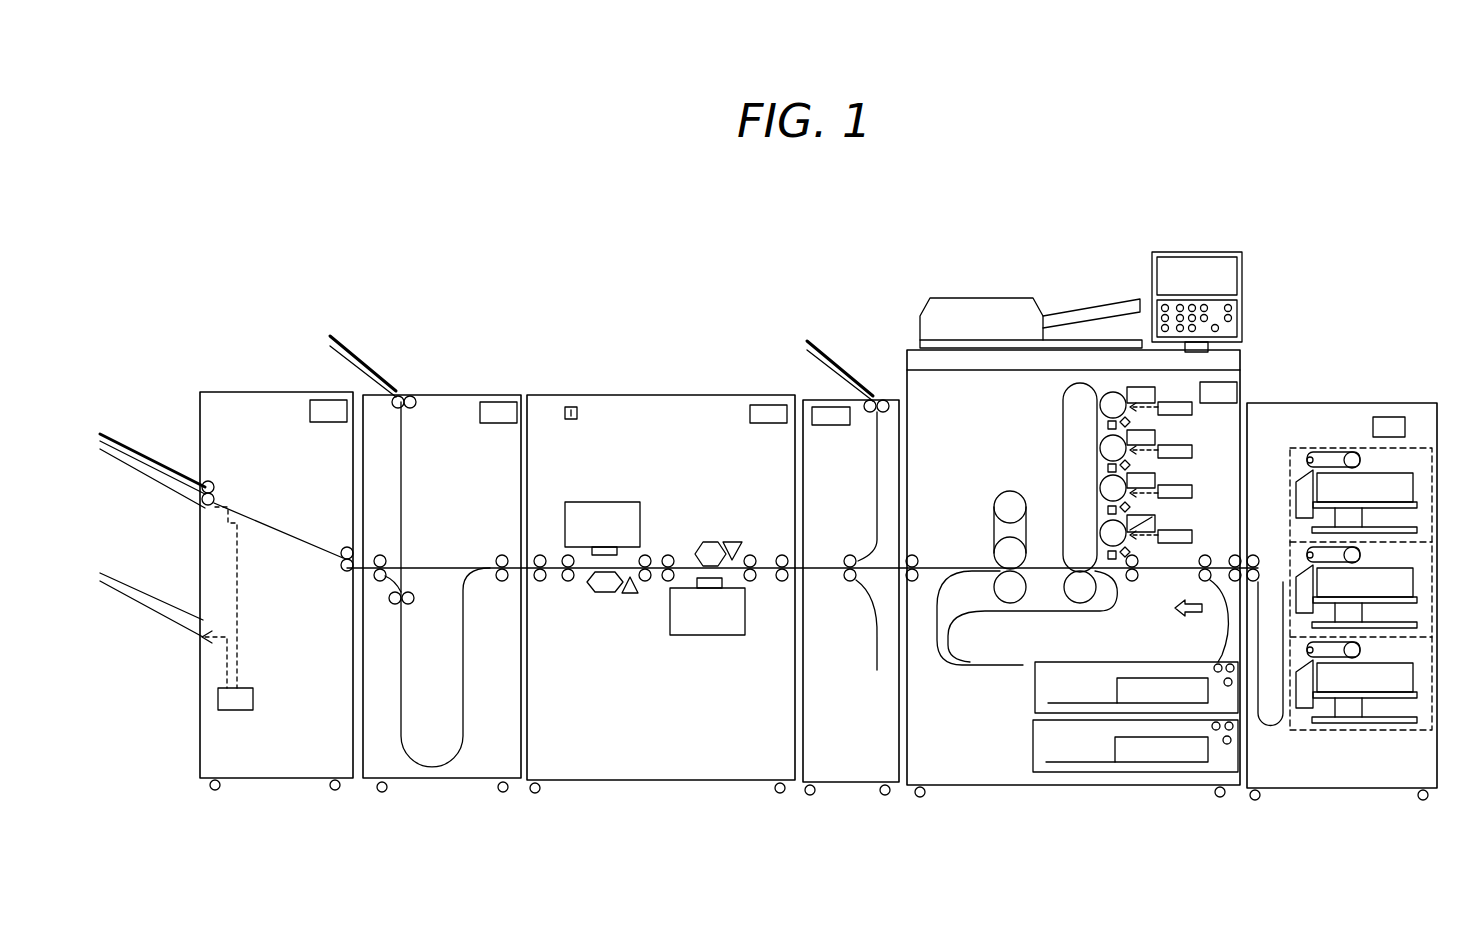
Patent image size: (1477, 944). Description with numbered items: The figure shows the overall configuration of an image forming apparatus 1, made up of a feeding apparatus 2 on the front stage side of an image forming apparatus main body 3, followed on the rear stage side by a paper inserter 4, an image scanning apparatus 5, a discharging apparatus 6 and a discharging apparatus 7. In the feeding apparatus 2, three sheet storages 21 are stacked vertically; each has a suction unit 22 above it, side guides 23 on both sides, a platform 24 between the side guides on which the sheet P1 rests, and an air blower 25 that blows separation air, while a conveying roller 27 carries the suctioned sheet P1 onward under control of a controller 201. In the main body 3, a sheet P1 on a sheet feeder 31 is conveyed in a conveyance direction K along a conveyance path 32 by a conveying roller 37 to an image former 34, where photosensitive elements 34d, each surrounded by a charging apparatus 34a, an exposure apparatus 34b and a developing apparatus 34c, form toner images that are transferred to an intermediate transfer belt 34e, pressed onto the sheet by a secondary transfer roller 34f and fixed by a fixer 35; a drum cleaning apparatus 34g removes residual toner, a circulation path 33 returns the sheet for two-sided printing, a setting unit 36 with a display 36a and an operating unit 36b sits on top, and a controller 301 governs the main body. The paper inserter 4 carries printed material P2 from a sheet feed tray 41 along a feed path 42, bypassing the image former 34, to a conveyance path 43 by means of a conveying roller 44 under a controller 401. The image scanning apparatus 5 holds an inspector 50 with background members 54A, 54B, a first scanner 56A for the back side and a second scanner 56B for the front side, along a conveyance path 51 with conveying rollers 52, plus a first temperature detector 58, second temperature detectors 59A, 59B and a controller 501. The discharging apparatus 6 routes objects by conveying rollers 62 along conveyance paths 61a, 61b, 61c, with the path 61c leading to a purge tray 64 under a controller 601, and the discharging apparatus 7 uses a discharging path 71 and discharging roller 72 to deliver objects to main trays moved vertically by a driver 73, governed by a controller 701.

The image forming apparatus 1 is at (934, 184).
The feeding apparatus 2 is at (1298, 402).
The image forming apparatus main body 3 is at (1120, 241).
The paper inserter 4 is at (851, 338).
The image scanning apparatus 5 is at (645, 377).
The discharging apparatus 6 is at (433, 376).
The discharging apparatus 7 is at (237, 381).
The sheet storage 21 is at (1290, 717).
The suction unit 22 is at (1338, 450).
The side guide 23 is at (1347, 712).
The platform 24 is at (1385, 690).
The air blower 25 is at (1308, 500).
The conveying roller 27 is at (1252, 573).
The sheet feeder 31 is at (1025, 708).
The conveyance path 32 is at (1150, 590).
The circulation path 33 is at (972, 611).
The image former 34 is at (1025, 432).
The charging apparatus 34a is at (1130, 548).
The exposure apparatus 34b is at (1168, 538).
The developing apparatus 34c is at (1147, 523).
The photosensitive element 34d is at (1113, 530).
The intermediate transfer belt 34e is at (1062, 467).
The secondary transfer roller 34f is at (1085, 587).
The drum cleaning apparatus 34g is at (1103, 553).
The fixer 35 is at (993, 565).
The setting unit 36 is at (1198, 252).
The display 36a is at (1175, 280).
The operating unit 36b is at (1177, 323).
The conveying roller 37 is at (915, 573).
The sheet feed tray 41 is at (823, 350).
The feed path 42 is at (877, 492).
The conveyance path 43 is at (830, 570).
The conveying roller 44 is at (862, 400).
The inspector 50 is at (605, 678).
The conveyance path 51 is at (547, 572).
The conveying roller 52 is at (542, 555).
The background member 54A is at (708, 541).
The background member 54B is at (603, 595).
The first scanner 56A is at (690, 634).
The second scanner 56B is at (601, 502).
The first temperature detector 58 is at (578, 411).
The second temperature detector 59A is at (737, 547).
The second temperature detector 59B is at (630, 597).
The conveyance path 61a is at (438, 568).
The conveyance path 61b is at (466, 657).
The conveyance path 61c is at (405, 480).
The conveying roller 62 is at (420, 398).
The purge tray 64 is at (385, 378).
The discharging path 71 is at (267, 523).
The discharging roller 72 is at (210, 480).
The driver 73 is at (240, 700).
The controller 201 is at (1387, 425).
The controller 301 is at (1218, 392).
The controller 401 is at (846, 426).
The controller 501 is at (768, 423).
The controller 601 is at (490, 420).
The controller 701 is at (326, 413).
The sheet P1 is at (1130, 693).
The printed material P2 is at (868, 374).
The conveyance direction K is at (1188, 596).